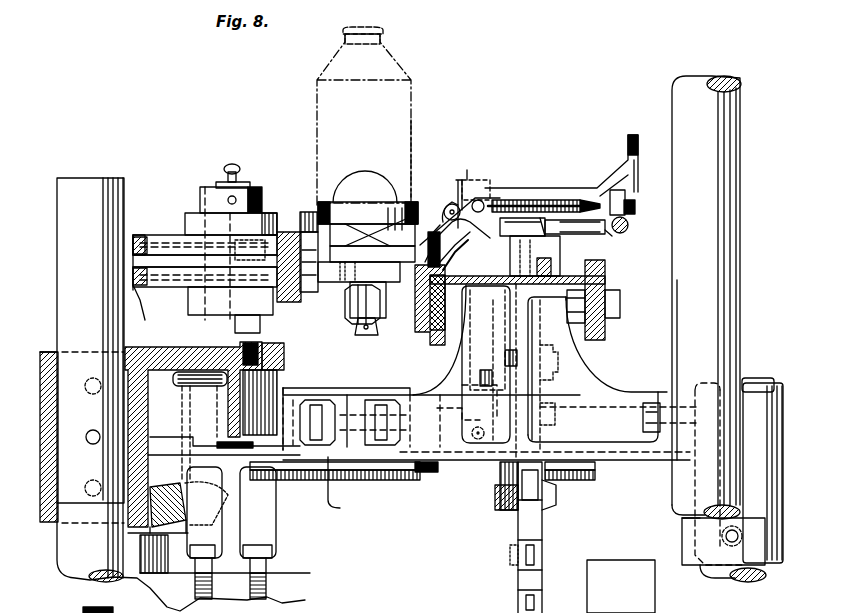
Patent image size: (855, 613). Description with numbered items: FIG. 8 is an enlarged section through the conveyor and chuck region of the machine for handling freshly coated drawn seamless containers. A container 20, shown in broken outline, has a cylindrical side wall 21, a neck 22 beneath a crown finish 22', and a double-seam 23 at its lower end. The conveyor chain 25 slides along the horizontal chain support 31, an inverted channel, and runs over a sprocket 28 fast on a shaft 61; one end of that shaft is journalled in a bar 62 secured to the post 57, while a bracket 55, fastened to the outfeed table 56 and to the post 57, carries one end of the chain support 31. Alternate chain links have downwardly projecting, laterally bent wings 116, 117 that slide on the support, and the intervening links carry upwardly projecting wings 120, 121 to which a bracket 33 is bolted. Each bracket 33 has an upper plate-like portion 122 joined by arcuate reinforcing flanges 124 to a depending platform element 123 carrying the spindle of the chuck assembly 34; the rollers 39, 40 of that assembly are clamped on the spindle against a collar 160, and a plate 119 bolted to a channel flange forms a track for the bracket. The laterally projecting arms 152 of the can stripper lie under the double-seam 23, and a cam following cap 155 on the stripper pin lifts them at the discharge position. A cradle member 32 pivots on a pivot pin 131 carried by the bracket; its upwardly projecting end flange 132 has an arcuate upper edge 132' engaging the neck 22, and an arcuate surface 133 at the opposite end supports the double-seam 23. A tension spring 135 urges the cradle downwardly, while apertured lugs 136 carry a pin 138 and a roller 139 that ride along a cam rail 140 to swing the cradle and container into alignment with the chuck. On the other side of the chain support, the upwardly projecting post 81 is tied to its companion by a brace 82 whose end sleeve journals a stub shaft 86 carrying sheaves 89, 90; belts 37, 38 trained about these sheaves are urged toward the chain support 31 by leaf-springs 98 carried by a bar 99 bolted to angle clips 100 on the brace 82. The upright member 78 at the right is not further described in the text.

The container 20 is at (395, 124).
The cylindrical side wall 21 is at (413, 145).
The neck 22 is at (387, 48).
The crown finish 22' is at (389, 29).
The double-seam 23 is at (420, 212).
The conveyor chain 25 is at (492, 298).
The sprocket 28 is at (542, 540).
The horizontal chain support 31 is at (605, 270).
The cradle member 32 is at (548, 195).
The bracket 33 is at (438, 225).
The chuck assembly 34 is at (308, 215).
The belt 37 is at (145, 243).
The belt 38 is at (145, 287).
The roller 39 is at (320, 222).
The roller 40 is at (345, 278).
The bracket 55 is at (566, 360).
The outfeed table 56 is at (344, 487).
The post 57 is at (712, 568).
The shaft 61 is at (615, 415).
The bar 62 is at (750, 390).
The post 78 is at (718, 305).
The post 81 is at (70, 332).
The brace 82 is at (165, 330).
The stub shaft 86 is at (243, 180).
The sheave 89 is at (138, 240).
The sheave 90 is at (143, 284).
The leaf-spring 98 is at (283, 215).
The bar 99 is at (312, 300).
The angle clip 100 is at (290, 305).
The wing 116 is at (562, 290).
The wing 117 is at (455, 340).
The plate 119 is at (425, 345).
The wing 120 is at (578, 232).
The wing 121 is at (510, 232).
The plate-like portion 122 is at (553, 220).
The platform element 123 is at (455, 263).
The arcuate reinforcing flange 124 is at (378, 226).
The pivot pin 131 is at (460, 200).
The end flange 132 is at (651, 154).
The arcuate upper edge 132' is at (611, 135).
The arcuate surface 133 is at (478, 180).
The tension spring 135 is at (512, 204).
The apertured lug 136 is at (635, 208).
The pin 138 is at (625, 205).
The roller 139 is at (628, 223).
The cam rail 140 is at (612, 236).
The arm 152 is at (338, 185).
The cam following cap 155 is at (364, 335).
The collar 160 is at (380, 290).